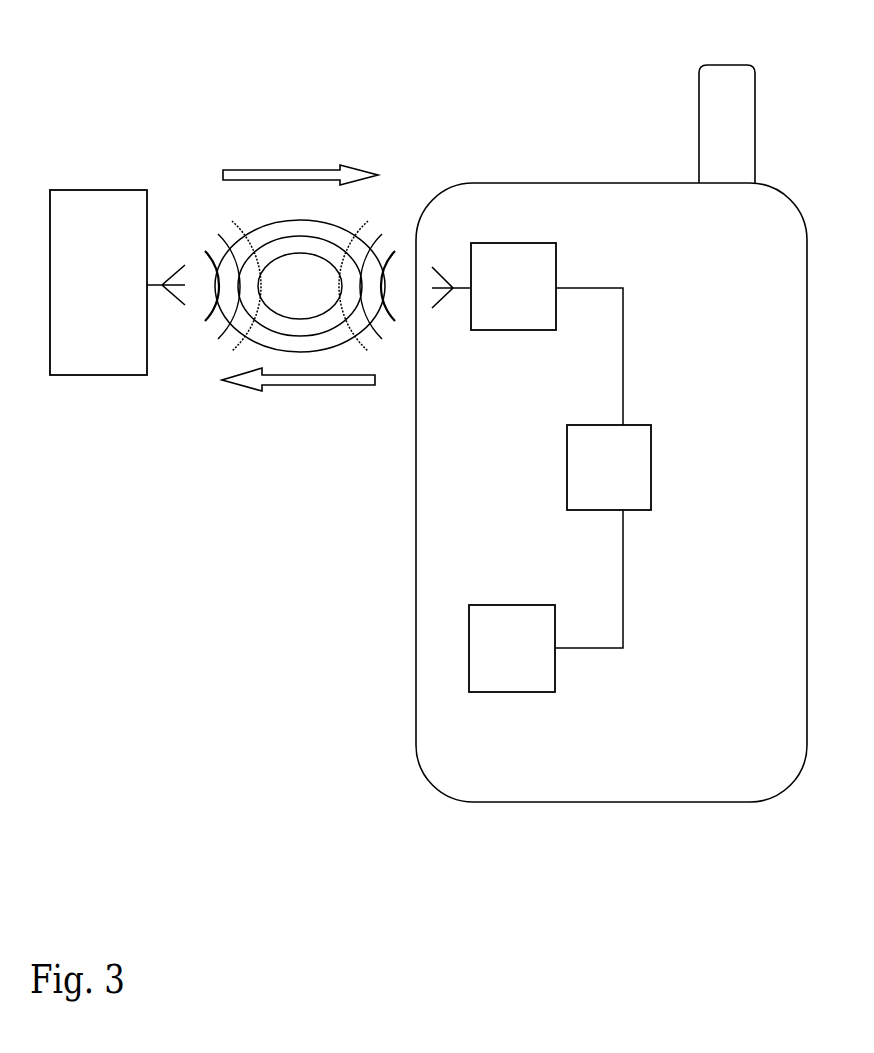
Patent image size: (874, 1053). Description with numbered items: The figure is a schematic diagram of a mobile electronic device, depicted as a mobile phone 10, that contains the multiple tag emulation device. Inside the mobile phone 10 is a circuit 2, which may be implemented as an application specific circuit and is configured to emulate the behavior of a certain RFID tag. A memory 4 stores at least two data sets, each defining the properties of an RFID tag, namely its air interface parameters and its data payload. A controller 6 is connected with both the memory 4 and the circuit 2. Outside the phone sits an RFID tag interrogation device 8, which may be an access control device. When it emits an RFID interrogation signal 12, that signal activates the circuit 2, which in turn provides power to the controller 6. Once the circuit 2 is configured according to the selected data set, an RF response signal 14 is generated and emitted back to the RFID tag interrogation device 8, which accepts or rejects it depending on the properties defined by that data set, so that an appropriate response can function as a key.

The circuit 2 is at (490, 297).
The memory 4 is at (493, 652).
The controller 6 is at (588, 476).
The RFID tag interrogation device 8 is at (86, 239).
The mobile phone 10 is at (701, 741).
The RFID interrogation signal 12 is at (290, 153).
The RF response signal 14 is at (268, 423).